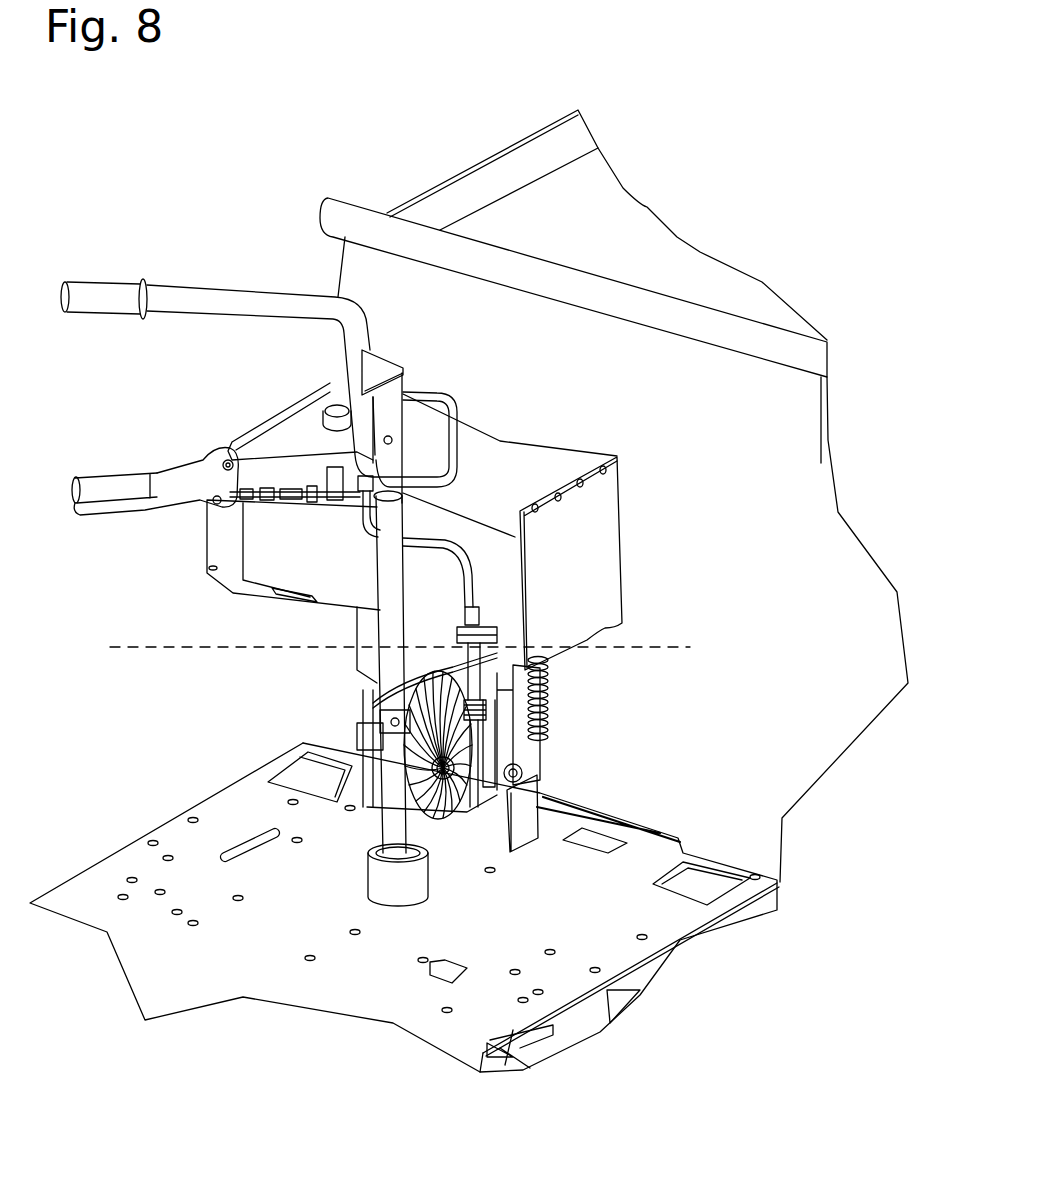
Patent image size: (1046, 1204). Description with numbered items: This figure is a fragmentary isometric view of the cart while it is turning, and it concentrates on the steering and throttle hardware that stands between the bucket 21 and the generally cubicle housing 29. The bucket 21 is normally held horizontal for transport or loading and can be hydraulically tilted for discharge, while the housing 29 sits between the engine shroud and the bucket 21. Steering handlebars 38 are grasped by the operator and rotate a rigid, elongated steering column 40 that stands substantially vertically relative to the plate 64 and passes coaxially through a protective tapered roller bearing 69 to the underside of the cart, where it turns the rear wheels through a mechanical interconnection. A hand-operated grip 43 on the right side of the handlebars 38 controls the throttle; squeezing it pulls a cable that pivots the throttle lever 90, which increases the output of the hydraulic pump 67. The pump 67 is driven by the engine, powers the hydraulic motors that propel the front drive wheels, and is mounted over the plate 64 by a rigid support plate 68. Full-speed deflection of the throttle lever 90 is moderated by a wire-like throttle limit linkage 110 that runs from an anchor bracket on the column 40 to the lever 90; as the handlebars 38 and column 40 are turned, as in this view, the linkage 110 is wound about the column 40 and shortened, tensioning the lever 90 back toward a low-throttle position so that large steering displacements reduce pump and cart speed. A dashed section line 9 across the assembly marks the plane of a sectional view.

The bucket 21 is at (652, 237).
The generally cubicle housing 29 is at (523, 453).
The handlebars 38 is at (165, 284).
The hand-operated grip 43 is at (155, 464).
The steering column 40 is at (392, 570).
The throttle limit linkage 110 is at (380, 687).
The section line 9- 9 is at (127, 640).
The throttle lever 90 is at (546, 754).
The hydraulic pump 67 is at (450, 815).
The support plate 68 is at (527, 812).
The plate 64 is at (227, 790).
The tapered roller bearing 69 is at (375, 885).